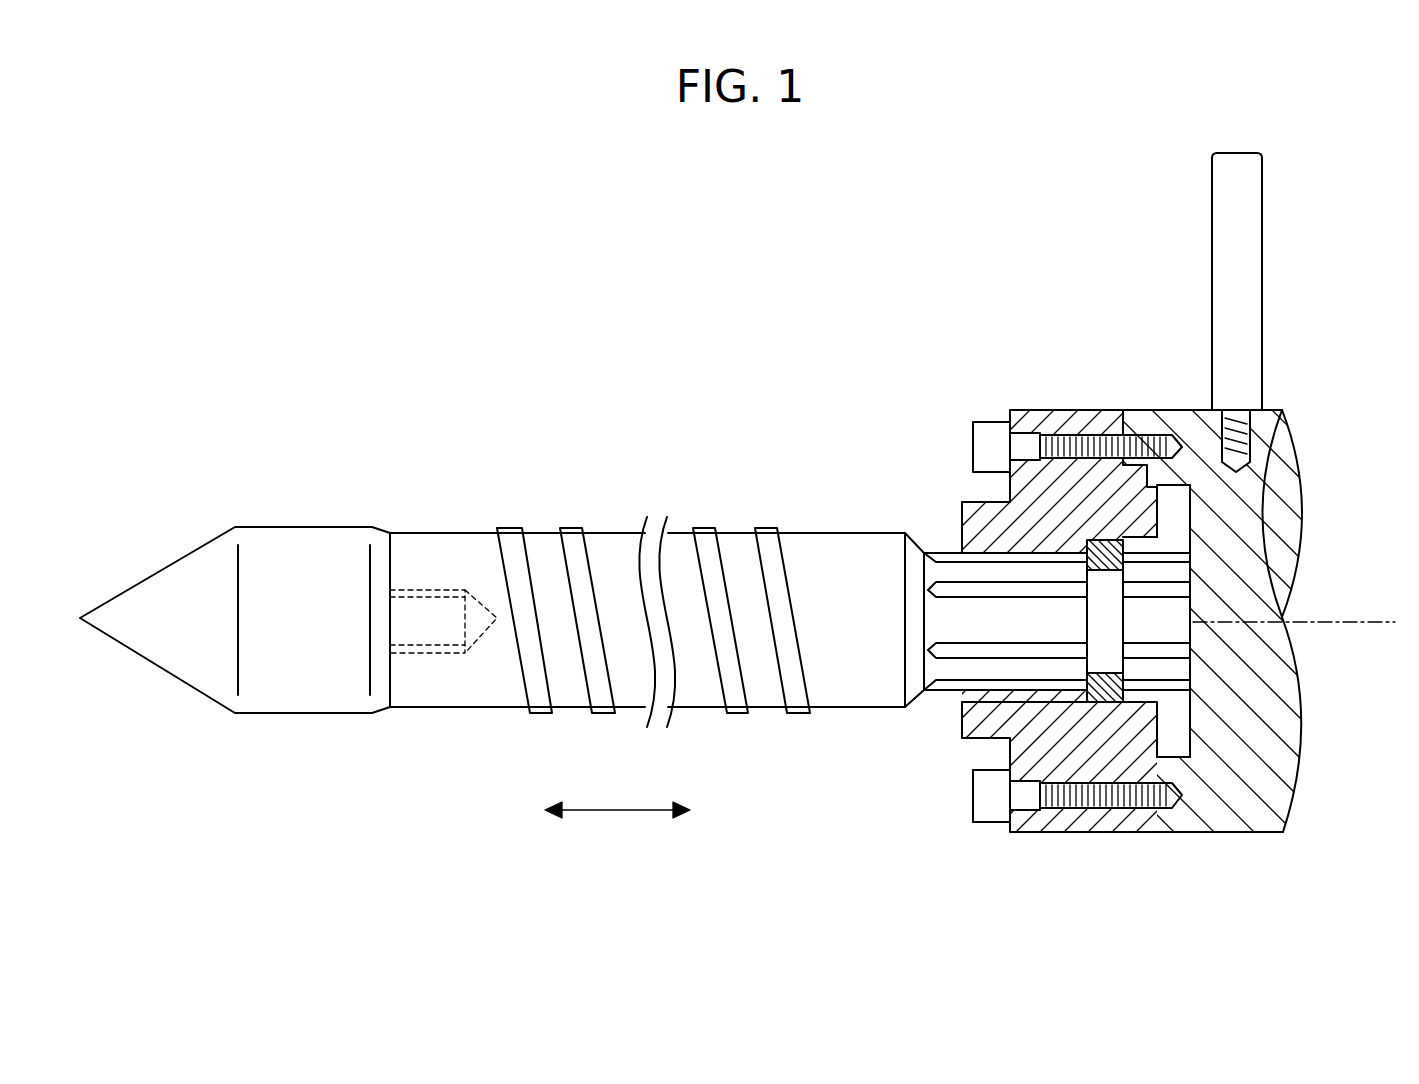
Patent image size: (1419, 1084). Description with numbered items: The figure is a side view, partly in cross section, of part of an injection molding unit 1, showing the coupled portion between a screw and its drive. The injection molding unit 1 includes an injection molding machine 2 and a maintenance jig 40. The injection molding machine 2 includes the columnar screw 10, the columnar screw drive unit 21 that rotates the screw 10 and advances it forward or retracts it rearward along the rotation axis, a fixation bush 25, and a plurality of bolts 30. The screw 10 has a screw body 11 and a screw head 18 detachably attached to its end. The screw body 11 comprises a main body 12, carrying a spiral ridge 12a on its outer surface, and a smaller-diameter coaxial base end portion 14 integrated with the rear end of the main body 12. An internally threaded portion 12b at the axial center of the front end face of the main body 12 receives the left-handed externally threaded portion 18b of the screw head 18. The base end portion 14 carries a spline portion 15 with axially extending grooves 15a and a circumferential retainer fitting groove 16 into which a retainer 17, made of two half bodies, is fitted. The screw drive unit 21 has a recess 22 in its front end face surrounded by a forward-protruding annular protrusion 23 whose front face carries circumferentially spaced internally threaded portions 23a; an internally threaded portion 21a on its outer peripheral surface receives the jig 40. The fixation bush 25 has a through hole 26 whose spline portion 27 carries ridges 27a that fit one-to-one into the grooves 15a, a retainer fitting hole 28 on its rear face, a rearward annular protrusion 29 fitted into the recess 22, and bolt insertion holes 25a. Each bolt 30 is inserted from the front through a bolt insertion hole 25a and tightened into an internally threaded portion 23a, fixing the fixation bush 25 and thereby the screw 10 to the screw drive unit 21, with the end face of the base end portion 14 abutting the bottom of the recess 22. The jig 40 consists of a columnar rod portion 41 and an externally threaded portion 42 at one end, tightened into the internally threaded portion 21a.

The injection molding unit 1 is at (380, 320).
The injection molding machine 2 is at (830, 440).
The screw 10 is at (418, 440).
The screw body 11 is at (413, 527).
The main body 12 is at (742, 527).
The spiral ridge 12a is at (514, 527).
The internally threaded portion 12b is at (433, 588).
The base end portion 14 is at (968, 613).
The spline portion 15 is at (938, 700).
The grooves 15a is at (947, 600).
The retainer fitting groove 16 is at (1107, 700).
The retainer 17 is at (1115, 700).
The screw head 18 is at (318, 527).
The externally threaded portion 18b is at (447, 628).
The screw drive unit 21 is at (1132, 410).
The internally threaded portion 21a is at (1235, 447).
The recess 22 is at (1192, 722).
The annular protrusion 23 is at (1120, 832).
The internally threaded portions 23a is at (1160, 410).
The fixation bush 25 is at (1085, 410).
The bolt insertion holes 25a is at (1050, 434).
The through hole 26 is at (1010, 690).
The spline portion 27 is at (1058, 665).
The ridges 27a is at (1022, 553).
The retainer fitting hole 28 is at (1140, 552).
The annular protrusion 29 is at (1160, 508).
The bolts 30 is at (988, 420).
The maintenance jig 40 is at (1272, 222).
The rod portion 41 is at (1262, 265).
The externally threaded portion 42 is at (1245, 432).